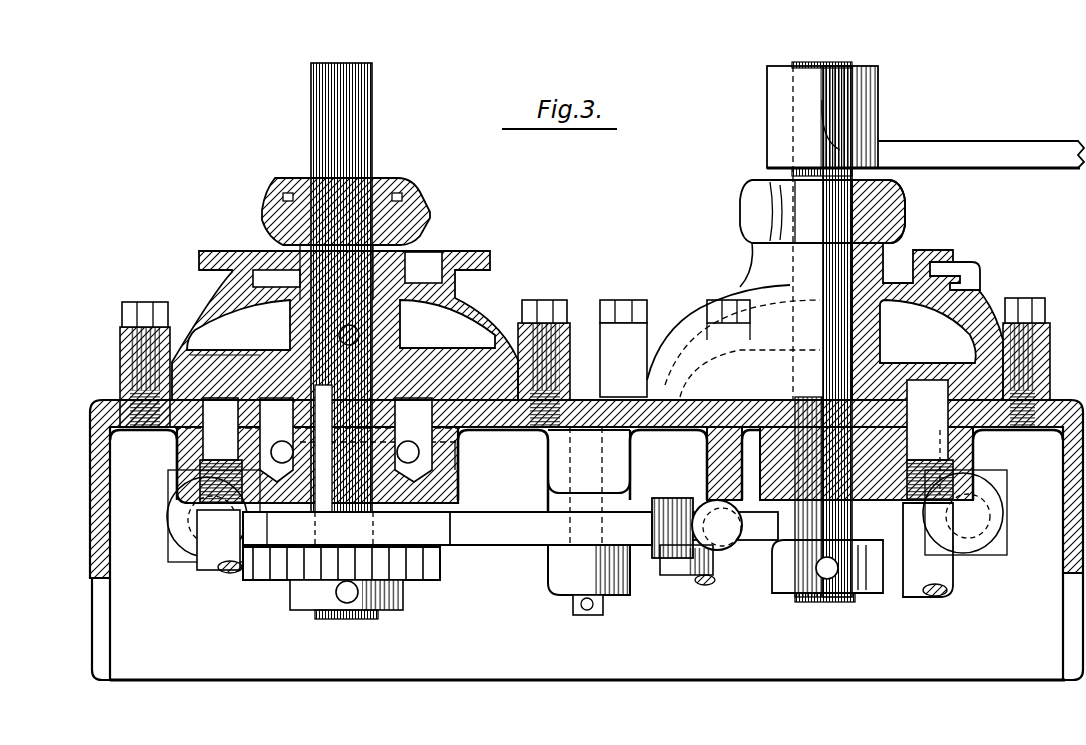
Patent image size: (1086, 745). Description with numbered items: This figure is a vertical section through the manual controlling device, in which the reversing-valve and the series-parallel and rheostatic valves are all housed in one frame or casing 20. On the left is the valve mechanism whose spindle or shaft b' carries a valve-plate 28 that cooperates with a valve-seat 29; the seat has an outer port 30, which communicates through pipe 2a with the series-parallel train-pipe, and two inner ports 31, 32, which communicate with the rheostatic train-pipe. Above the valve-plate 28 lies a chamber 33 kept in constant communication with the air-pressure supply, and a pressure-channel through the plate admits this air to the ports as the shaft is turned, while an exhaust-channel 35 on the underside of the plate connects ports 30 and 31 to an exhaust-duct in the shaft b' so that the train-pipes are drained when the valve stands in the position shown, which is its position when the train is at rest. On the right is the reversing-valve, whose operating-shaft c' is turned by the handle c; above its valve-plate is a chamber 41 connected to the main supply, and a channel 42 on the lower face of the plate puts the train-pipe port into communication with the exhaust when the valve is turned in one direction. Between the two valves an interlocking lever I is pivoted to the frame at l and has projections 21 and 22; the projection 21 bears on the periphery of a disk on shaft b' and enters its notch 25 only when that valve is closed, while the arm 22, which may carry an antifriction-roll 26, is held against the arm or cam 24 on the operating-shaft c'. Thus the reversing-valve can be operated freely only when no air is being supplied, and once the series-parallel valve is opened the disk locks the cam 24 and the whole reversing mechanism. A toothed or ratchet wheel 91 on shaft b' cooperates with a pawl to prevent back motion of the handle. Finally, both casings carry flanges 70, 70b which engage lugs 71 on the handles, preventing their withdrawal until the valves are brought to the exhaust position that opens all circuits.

The frame or casing 20 is at (478, 410).
The valve-seat 29 is at (455, 432).
The outer port 30 is at (221, 450).
The inner port 31 is at (276, 440).
The inner port 32 is at (413, 440).
The flange 70 is at (490, 261).
The flange 70b is at (953, 253).
The lug 71 is at (962, 277).
The chamber 33 is at (238, 325).
The exhaust-channel 35 is at (232, 388).
The valve-plate 28 is at (428, 362).
The spindle or shaft b' is at (357, 287).
The chamber 41 is at (825, 321).
The channel 42 is at (925, 392).
The operating-shaft c' is at (822, 217).
The reversing-valve handle c is at (925, 139).
The pipe 2a is at (213, 521).
The notch 25 is at (447, 528).
The arm or projection 21 is at (470, 528).
The lever I is at (563, 511).
The toothed or ratchet wheel 91 is at (418, 577).
The pivot l is at (580, 600).
The arm or projection 22 is at (658, 528).
The arm or cam 24 is at (787, 551).
The antifriction-roll 26 is at (712, 562).